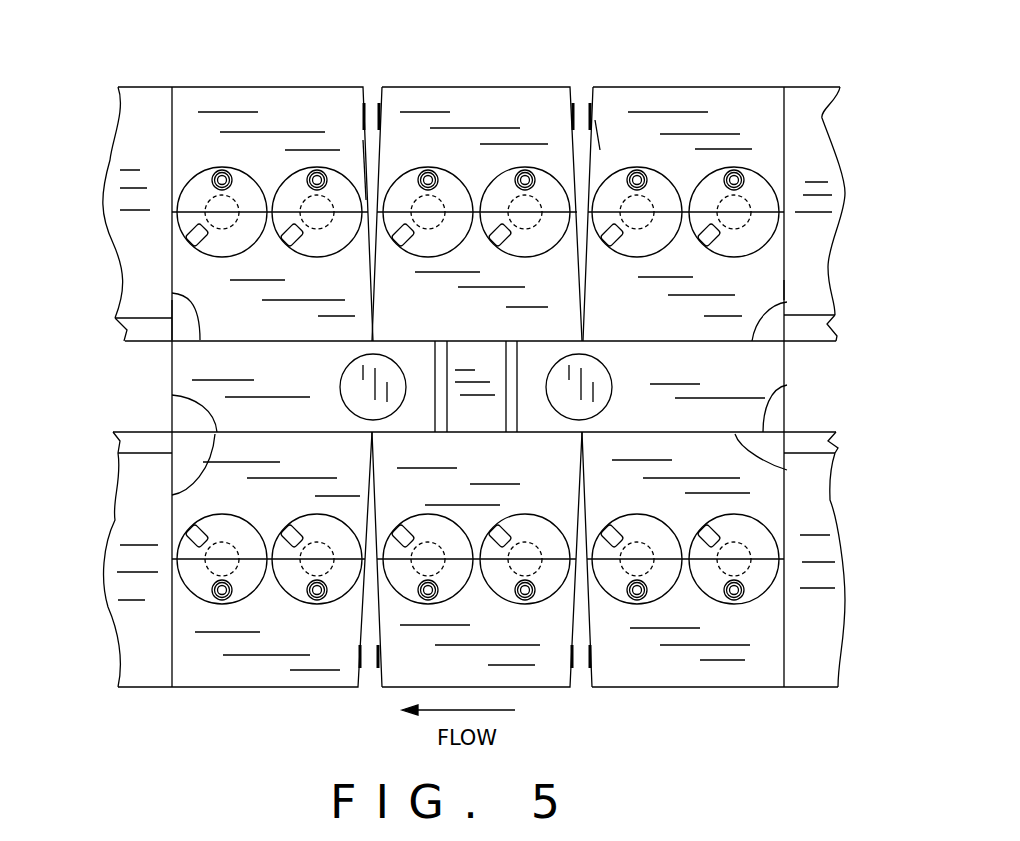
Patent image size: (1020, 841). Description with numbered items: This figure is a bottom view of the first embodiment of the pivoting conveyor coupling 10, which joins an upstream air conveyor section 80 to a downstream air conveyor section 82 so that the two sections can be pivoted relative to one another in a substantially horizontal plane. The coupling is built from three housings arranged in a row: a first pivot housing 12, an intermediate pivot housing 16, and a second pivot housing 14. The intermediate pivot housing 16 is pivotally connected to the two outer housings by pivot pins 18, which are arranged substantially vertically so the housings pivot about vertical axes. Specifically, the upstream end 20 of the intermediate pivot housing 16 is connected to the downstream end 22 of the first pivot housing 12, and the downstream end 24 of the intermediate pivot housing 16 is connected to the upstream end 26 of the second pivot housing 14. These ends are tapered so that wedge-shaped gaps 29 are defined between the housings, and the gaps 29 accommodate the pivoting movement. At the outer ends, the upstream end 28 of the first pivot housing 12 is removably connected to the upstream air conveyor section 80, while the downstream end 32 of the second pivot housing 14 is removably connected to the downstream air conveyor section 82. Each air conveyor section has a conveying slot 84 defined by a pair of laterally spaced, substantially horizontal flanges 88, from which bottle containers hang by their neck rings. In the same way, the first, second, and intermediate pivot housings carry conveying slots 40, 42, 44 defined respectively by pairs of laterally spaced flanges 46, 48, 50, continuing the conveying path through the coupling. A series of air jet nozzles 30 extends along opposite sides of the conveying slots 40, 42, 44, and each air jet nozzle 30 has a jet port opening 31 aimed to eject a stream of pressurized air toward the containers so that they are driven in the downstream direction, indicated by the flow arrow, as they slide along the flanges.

The pivoting conveyor coupling 10 is at (136, 68).
The first pivot housing 12 is at (757, 108).
The second pivot housing 14 is at (262, 105).
The intermediate pivot housing 16 is at (485, 108).
The pivot pin 18 is at (355, 384).
The upstream end of the intermediate pivot housing 20 is at (573, 147).
The downstream end of the first pivot housing 22 is at (588, 88).
The downstream end of the intermediate pivot housing 24 is at (375, 152).
The upstream end of the second pivot housing 26 is at (367, 88).
The upstream end of the first pivot housing 28 is at (787, 290).
The gap 29 is at (367, 627).
The air jet nozzle 30 is at (216, 186).
The jet port opening 31 is at (200, 532).
The downstream end of the second pivot housing 32 is at (172, 262).
The conveying slot of the first pivot housing 40 is at (787, 385).
The conveying slot of the second pivot housing 42 is at (172, 395).
The conveying slot of the intermediate pivot housing 44 is at (573, 655).
The flanges of the first pivot housing 46 is at (787, 302).
The flanges of the second pivot housing 48 is at (172, 293).
The flanges of the intermediate pivot housing 50 is at (478, 340).
The upstream air conveyor section 80 is at (797, 97).
The downstream air conveyor section 82 is at (148, 110).
The conveying slot 84 is at (146, 433).
The flange 88 is at (140, 329).